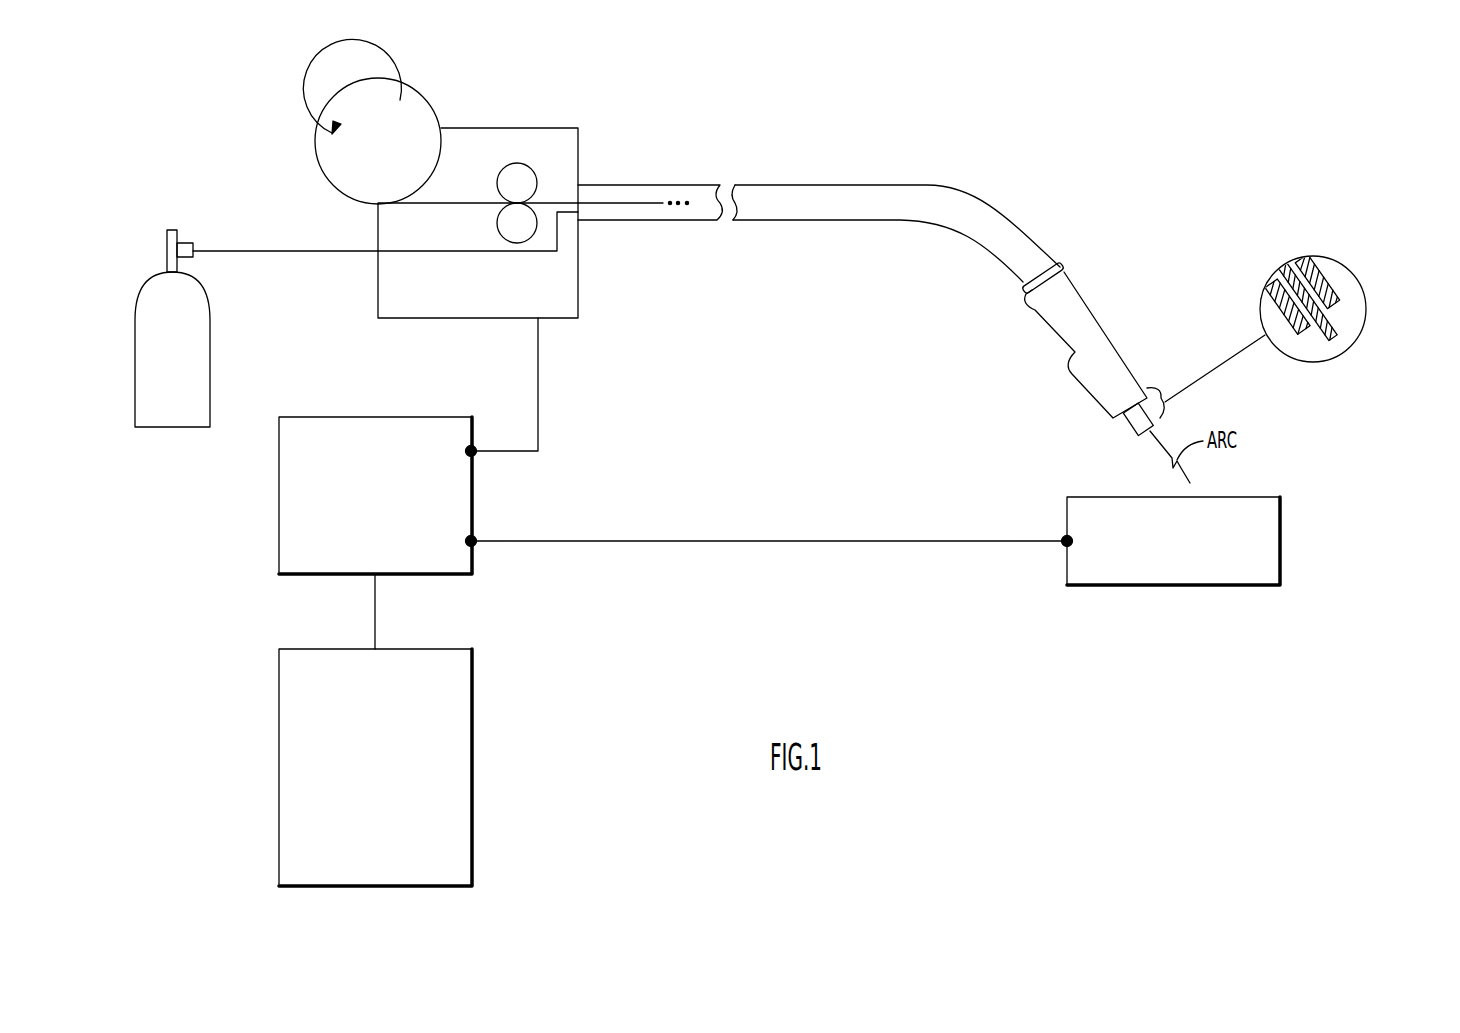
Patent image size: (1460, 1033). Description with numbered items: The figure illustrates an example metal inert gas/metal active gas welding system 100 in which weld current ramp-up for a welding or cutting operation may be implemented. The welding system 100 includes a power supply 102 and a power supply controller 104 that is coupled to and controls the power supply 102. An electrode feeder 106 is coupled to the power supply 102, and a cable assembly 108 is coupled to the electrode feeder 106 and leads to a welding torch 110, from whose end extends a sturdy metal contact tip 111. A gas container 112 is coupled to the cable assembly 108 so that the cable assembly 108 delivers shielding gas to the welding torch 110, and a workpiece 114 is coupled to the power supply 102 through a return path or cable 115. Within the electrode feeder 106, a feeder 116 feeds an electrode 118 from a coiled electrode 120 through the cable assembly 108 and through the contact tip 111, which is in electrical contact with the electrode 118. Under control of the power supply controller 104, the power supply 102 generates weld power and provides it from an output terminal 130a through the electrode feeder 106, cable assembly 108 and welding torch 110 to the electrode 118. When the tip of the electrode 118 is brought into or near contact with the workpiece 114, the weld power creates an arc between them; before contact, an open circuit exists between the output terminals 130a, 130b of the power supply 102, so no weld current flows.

The welding system 100 is at (1164, 100).
The power supply 102 is at (279, 518).
The power supply controller 104 is at (279, 717).
The electrode feeder 106 is at (296, 133).
The cable assembly 108 is at (850, 185).
The welding torch 110 is at (1117, 352).
The contact tip 111 is at (1366, 308).
The gas container 112 is at (135, 325).
The workpiece 114 is at (1280, 557).
The return path/cable 115 is at (770, 540).
The feeder 116 is at (524, 160).
The electrode 118 is at (463, 202).
The coiled electrode 120 is at (317, 158).
The output terminal 130a is at (478, 450).
The output terminal 130b is at (478, 545).